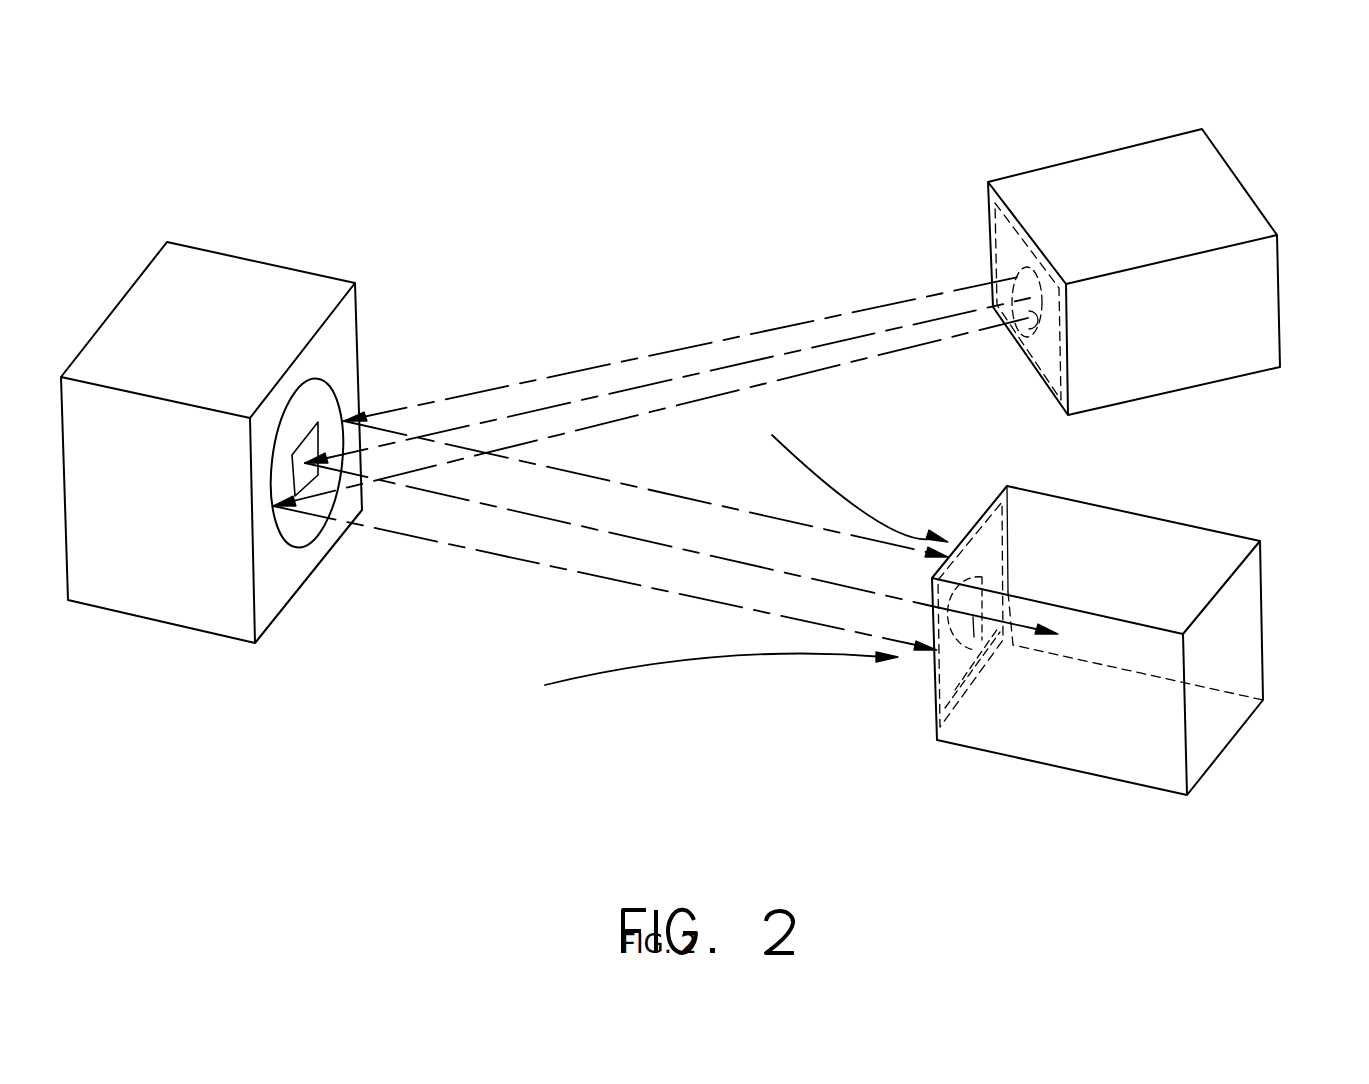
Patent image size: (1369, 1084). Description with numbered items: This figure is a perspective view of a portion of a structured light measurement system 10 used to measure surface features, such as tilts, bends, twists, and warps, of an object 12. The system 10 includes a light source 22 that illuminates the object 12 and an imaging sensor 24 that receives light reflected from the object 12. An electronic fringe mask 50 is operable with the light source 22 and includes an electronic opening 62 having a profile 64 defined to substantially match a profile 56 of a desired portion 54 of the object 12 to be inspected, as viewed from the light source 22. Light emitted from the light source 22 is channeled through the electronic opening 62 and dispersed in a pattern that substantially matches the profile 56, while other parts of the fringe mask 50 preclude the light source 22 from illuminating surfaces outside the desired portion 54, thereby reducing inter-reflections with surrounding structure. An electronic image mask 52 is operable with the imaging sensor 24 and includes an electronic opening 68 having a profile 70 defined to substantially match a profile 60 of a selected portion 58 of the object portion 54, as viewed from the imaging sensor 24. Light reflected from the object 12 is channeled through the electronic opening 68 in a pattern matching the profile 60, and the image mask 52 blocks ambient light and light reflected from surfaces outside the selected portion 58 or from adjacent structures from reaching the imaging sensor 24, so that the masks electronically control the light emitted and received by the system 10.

The structured light measurement system 10 is at (448, 80).
The object 12 is at (228, 270).
The light source 22 is at (1070, 158).
The imaging sensor 24 is at (1263, 607).
The electronic fringe mask 50 is at (1043, 388).
The electronic image mask 52 is at (987, 520).
The desired portion 54 is at (347, 396).
The profile 56 is at (336, 386).
The selected portion 58 is at (275, 475).
The profile 60 is at (273, 506).
The electronic opening 62 is at (1020, 335).
The profile 64 is at (998, 249).
The electronic opening 68 is at (945, 655).
The profile 70 is at (932, 703).